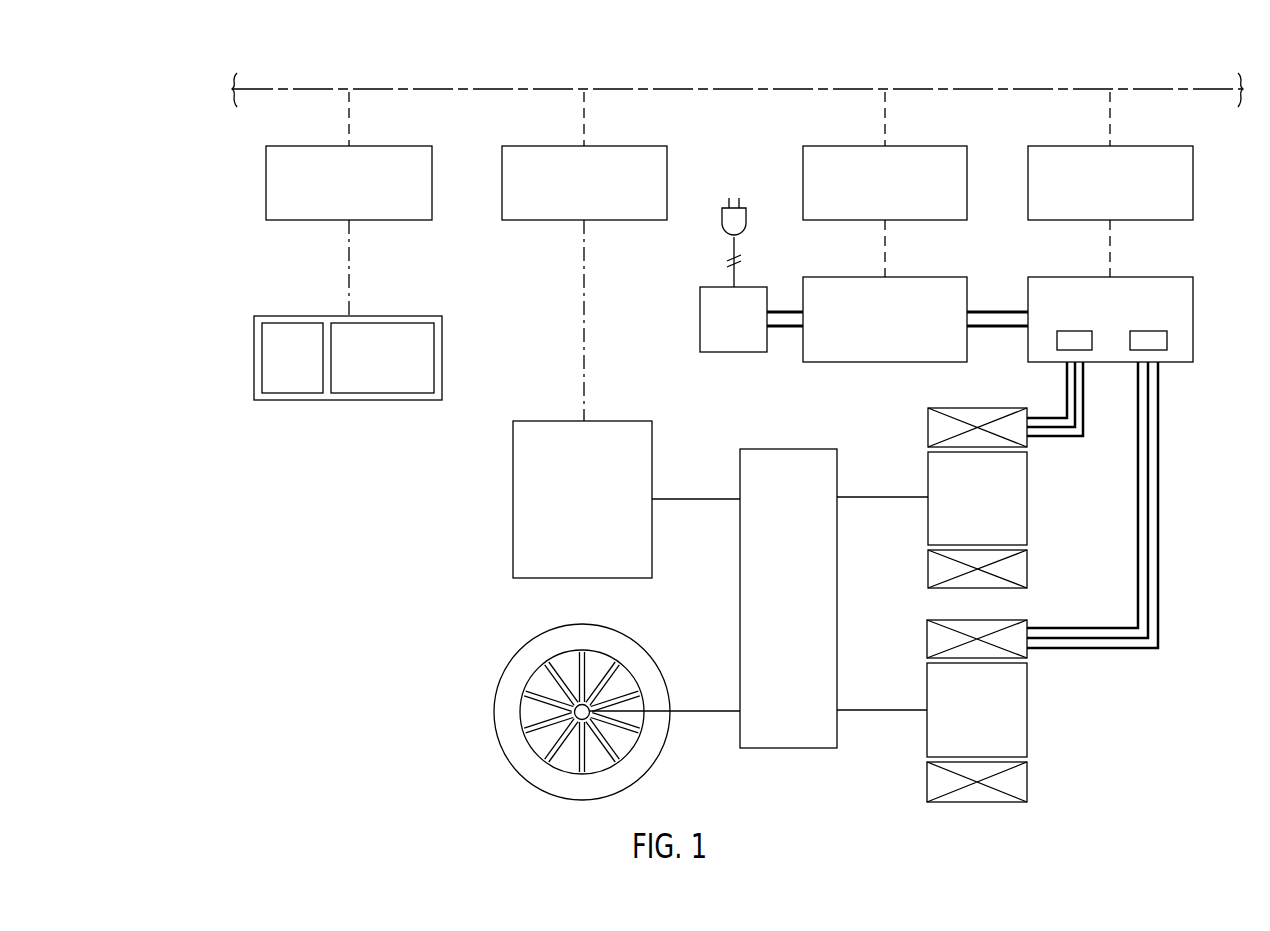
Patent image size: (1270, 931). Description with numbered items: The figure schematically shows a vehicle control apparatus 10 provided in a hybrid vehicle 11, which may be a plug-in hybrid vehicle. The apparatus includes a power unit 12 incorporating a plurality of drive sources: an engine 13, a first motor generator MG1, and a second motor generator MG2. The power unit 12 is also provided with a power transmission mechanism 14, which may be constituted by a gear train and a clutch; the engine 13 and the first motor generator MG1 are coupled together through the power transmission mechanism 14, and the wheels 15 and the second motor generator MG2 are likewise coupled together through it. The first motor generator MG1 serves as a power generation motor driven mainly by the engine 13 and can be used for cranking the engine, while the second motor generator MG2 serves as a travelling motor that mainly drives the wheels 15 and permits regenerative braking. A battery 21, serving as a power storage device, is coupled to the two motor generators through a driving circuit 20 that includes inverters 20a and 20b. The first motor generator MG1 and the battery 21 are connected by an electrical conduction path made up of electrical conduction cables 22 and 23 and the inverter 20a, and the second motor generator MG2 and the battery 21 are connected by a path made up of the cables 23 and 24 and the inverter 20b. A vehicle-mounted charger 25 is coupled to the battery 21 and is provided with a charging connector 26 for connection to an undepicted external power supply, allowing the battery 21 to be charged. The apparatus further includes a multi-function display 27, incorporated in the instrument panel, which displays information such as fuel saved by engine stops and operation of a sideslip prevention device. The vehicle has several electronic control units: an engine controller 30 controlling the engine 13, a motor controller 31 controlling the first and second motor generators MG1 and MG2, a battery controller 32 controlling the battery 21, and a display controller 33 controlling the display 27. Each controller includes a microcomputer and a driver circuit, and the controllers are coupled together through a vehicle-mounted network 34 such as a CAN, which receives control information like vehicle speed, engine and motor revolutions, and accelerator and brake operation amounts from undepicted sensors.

The vehicle control apparatus 10 is at (222, 60).
The hybrid vehicle 11 is at (337, 555).
The power unit 12 is at (463, 483).
The engine 13 is at (548, 420).
The power transmission mechanism 14 is at (765, 448).
The wheels 15 is at (494, 712).
The driving circuit 20 is at (1117, 306).
The inverter 20a is at (1057, 341).
The inverter 20b is at (1167, 341).
The battery 21 is at (872, 364).
The electrical conduction cable 22 is at (1076, 440).
The electrical conduction cable 23 is at (1002, 310).
The electrical conduction cable 24 is at (1160, 530).
The vehicle-mounted charger 25 is at (700, 312).
The charging connector 26 is at (722, 227).
The multi-function display 27 is at (254, 334).
The engine controller 30 is at (502, 156).
The motor controller 31 is at (1193, 158).
The battery controller 32 is at (803, 154).
The display controller 33 is at (266, 156).
The vehicle-mounted network 34 is at (811, 88).
The first motor generator MG1 is at (1028, 513).
The second motor generator MG2 is at (1028, 723).